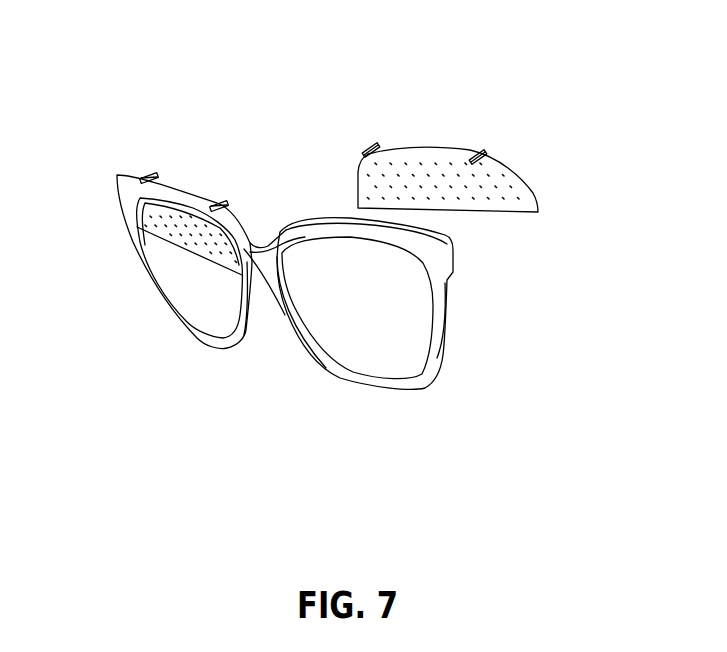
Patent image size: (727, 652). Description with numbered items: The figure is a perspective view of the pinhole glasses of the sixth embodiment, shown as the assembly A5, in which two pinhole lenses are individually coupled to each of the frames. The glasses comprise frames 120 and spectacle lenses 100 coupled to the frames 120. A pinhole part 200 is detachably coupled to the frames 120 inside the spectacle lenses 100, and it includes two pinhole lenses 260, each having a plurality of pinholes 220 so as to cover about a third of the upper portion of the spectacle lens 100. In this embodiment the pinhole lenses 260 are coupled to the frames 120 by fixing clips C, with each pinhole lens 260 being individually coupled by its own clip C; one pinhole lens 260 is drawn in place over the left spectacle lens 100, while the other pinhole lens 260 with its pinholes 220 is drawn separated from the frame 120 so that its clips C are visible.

The eyeglasses assembly with clip-on lens covers A5 is at (183, 156).
The spectacle lens 100 is at (368, 346).
The frame 120 is at (427, 377).
The pinhole part 200 is at (174, 240).
The pinholes 220 is at (418, 165).
The pinhole lens 260 is at (531, 190).
The fixing clip C is at (144, 178).